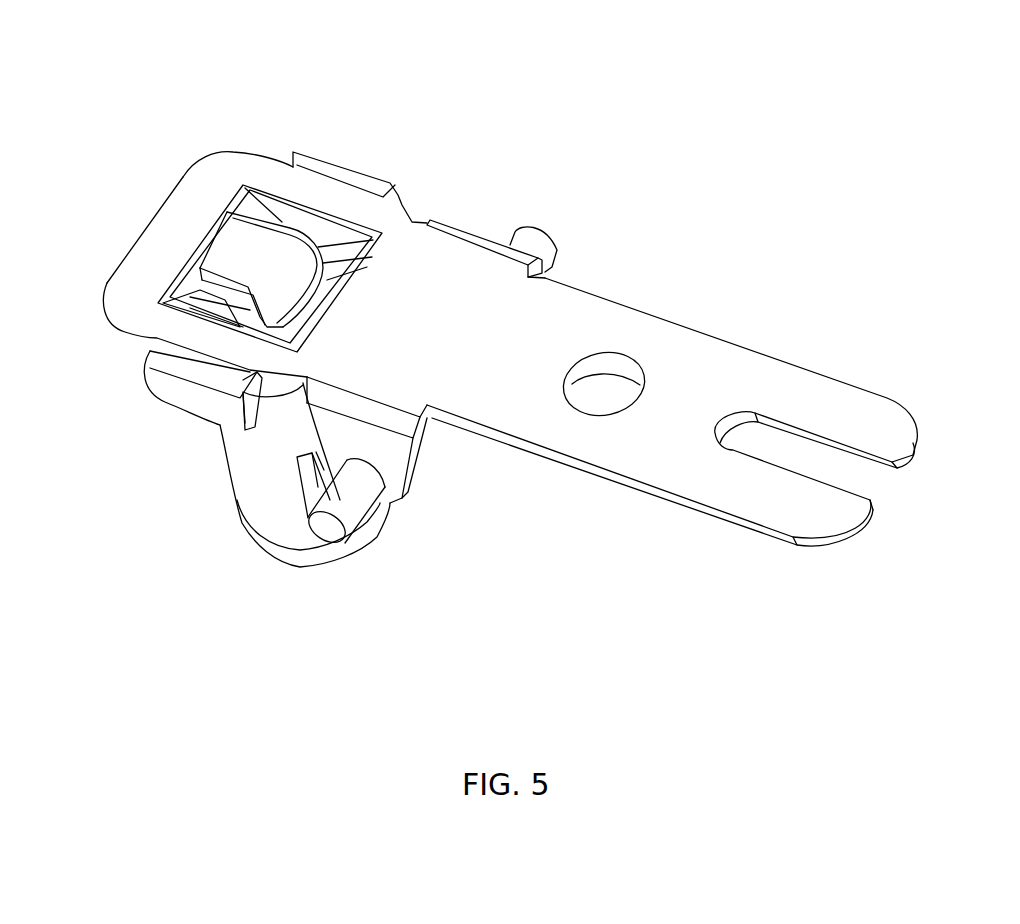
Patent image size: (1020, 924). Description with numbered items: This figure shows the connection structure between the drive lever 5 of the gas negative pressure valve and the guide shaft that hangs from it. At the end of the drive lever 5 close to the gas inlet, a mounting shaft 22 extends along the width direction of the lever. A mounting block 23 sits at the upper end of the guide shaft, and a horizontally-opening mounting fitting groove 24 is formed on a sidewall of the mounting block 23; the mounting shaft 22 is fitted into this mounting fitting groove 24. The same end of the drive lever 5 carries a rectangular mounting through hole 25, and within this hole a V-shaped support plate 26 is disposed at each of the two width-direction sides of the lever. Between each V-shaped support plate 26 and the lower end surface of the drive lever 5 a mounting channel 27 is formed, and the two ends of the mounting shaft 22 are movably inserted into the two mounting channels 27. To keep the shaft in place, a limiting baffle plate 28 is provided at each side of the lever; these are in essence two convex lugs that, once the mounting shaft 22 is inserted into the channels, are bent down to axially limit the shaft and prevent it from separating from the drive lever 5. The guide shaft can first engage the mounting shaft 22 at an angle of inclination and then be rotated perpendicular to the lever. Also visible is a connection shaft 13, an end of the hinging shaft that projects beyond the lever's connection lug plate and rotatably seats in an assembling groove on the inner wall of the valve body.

The drive lever 5 is at (702, 387).
The connection shaft 13 is at (345, 510).
The mounting shaft 22 is at (112, 322).
The mounting block 23 is at (367, 268).
The mounting fitting groove 24 is at (200, 307).
The mounting through hole 25 is at (303, 210).
The V-shaped support plate 26 is at (277, 220).
The mounting channel 27 is at (337, 240).
The limiting baffle plate 28 is at (193, 398).